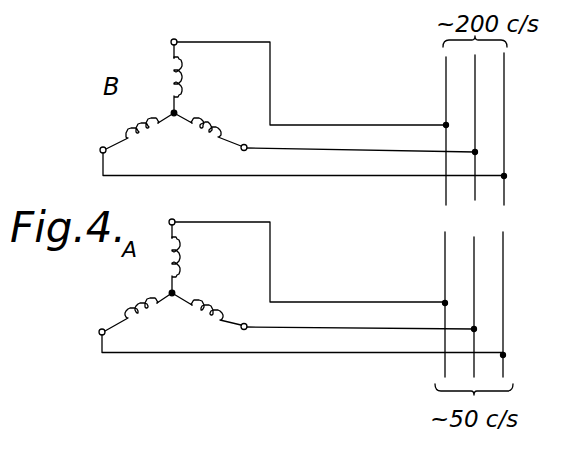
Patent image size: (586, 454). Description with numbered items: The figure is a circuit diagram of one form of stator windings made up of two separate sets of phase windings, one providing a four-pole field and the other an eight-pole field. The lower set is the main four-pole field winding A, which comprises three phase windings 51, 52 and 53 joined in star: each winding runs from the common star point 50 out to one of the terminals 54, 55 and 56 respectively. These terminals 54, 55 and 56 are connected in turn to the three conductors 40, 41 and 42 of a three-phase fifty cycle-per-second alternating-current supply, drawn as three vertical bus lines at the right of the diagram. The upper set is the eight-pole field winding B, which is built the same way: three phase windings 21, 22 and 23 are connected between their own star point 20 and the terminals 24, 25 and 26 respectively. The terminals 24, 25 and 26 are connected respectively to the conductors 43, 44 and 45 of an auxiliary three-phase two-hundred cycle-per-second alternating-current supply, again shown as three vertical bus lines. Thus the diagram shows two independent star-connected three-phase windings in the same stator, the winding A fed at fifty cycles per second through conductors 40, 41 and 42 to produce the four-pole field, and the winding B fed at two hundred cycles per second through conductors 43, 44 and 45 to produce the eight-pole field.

The star point 20 is at (177, 111).
The phase winding 21 is at (179, 76).
The phase winding 22 is at (207, 124).
The phase winding 23 is at (132, 124).
The terminal 24 is at (171, 42).
The terminal 25 is at (240, 148).
The terminal 26 is at (100, 149).
The conductor 40 is at (444, 245).
The conductor 41 is at (473, 284).
The conductor 42 is at (505, 267).
The conductor 43 is at (444, 77).
The conductor 44 is at (473, 120).
The conductor 45 is at (506, 77).
The star point 50 is at (176, 290).
The phase winding 51 is at (178, 248).
The phase winding 52 is at (213, 312).
The phase winding 53 is at (147, 312).
The terminal 54 is at (172, 218).
The terminal 55 is at (247, 330).
The terminal 56 is at (99, 332).